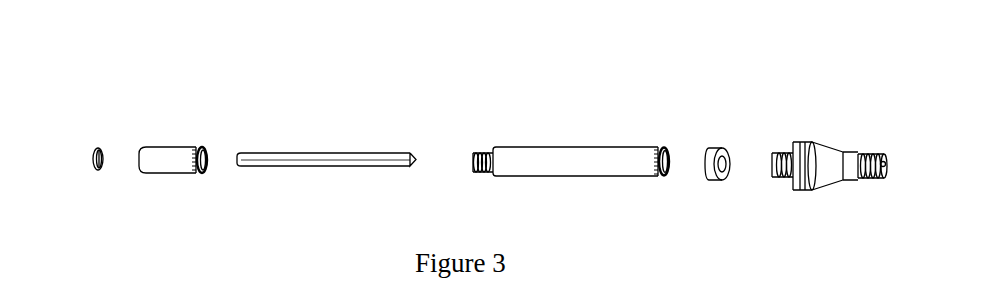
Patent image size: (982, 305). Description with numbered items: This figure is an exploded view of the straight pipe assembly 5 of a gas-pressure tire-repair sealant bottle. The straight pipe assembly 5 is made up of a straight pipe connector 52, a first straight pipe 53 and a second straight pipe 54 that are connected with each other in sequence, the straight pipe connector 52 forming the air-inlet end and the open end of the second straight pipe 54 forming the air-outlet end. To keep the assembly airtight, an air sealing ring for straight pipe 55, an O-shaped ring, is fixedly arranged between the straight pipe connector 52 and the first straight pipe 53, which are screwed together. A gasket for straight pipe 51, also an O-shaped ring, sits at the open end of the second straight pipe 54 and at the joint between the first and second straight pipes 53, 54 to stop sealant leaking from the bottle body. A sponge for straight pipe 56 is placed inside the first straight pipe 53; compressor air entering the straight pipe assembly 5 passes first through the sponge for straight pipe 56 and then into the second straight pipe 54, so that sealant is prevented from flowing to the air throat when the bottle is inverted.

The straight pipe assembly 5 is at (198, 78).
The gasket for straight pipe 51 is at (69, 183).
The straight pipe connector 52 is at (826, 182).
The first straight pipe 53 is at (571, 183).
The second straight pipe 54 is at (160, 182).
The air sealing ring for straight pipe 55 is at (691, 185).
The sponge for straight pipe 56 is at (326, 185).